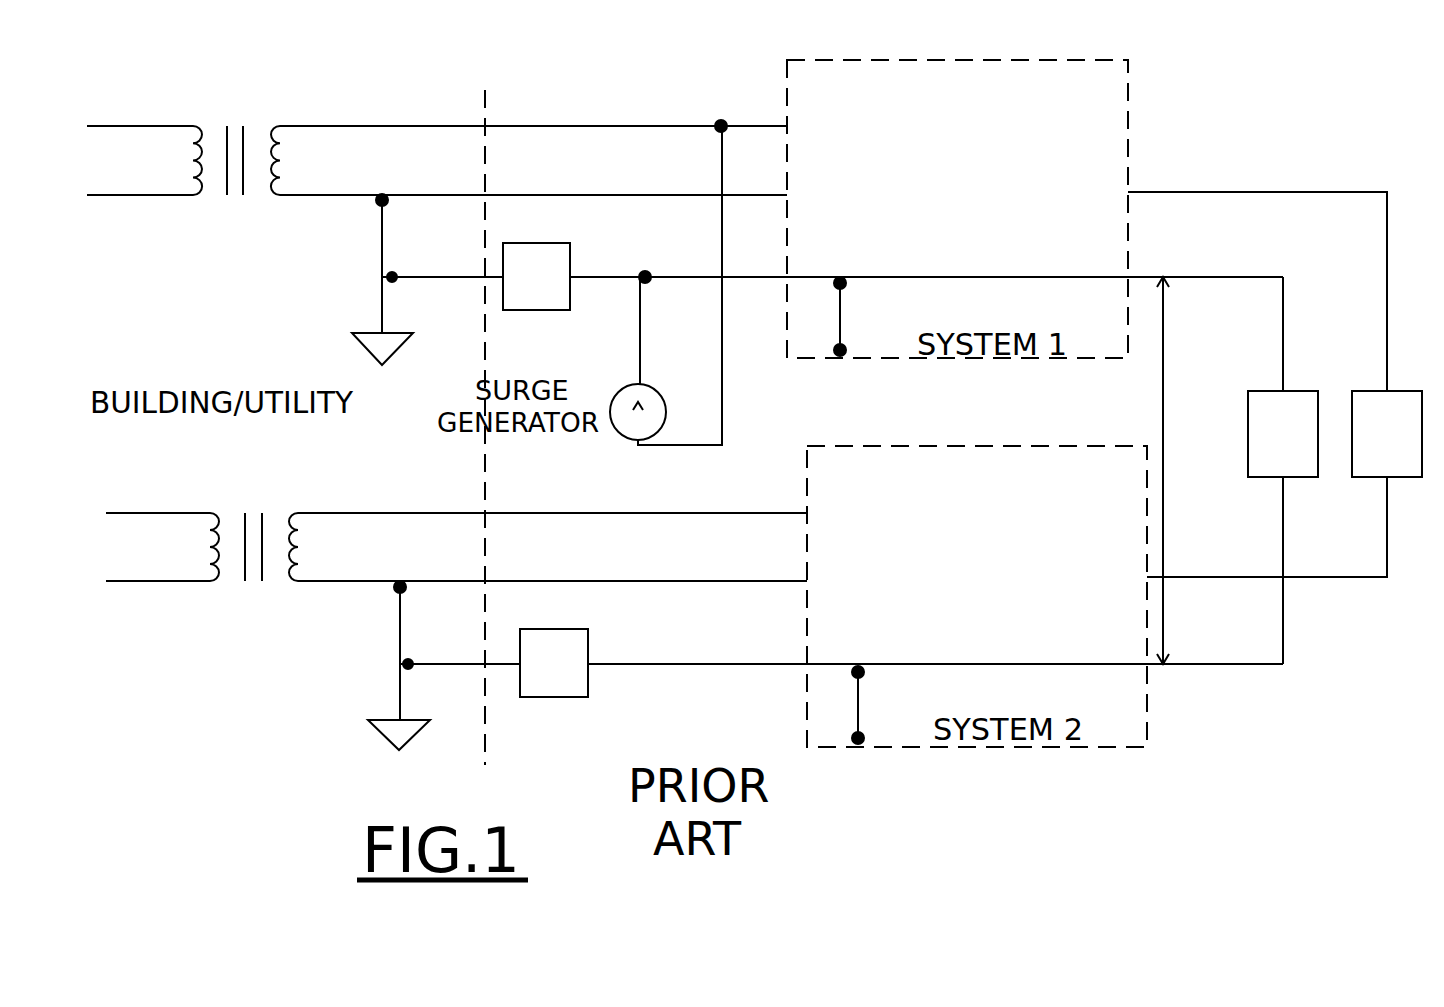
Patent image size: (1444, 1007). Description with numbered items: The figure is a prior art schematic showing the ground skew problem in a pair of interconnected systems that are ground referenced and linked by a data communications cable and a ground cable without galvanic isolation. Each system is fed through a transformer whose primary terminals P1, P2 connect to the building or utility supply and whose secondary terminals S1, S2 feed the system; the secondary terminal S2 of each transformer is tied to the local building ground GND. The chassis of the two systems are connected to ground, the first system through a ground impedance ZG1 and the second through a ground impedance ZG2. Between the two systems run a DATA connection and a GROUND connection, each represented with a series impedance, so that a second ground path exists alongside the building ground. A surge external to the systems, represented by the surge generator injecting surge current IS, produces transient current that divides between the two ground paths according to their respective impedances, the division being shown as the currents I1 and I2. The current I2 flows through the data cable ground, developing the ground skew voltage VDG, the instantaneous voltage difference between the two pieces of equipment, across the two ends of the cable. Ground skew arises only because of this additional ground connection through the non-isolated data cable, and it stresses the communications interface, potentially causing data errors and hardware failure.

The primary winding terminal 1 P1 is at (174, 336).
The primary winding terminal 2 P2 is at (148, 368).
The secondary winding terminal 1 S1 is at (539, 337).
The secondary winding terminal 2 S2 is at (543, 378).
The building/utility ground GND is at (436, 472).
The ground path impedance ZG1 is at (893, 296).
The ground impedance of system 2 ZG2 is at (901, 684).
The surge current IS is at (657, 352).
The ground path current I1 is at (622, 293).
The data cable ground current I2 is at (667, 297).
The data line between systems DATA is at (1275, 383).
The ground line between systems GROUND is at (1236, 472).
The ground skew voltage VDG is at (1200, 470).